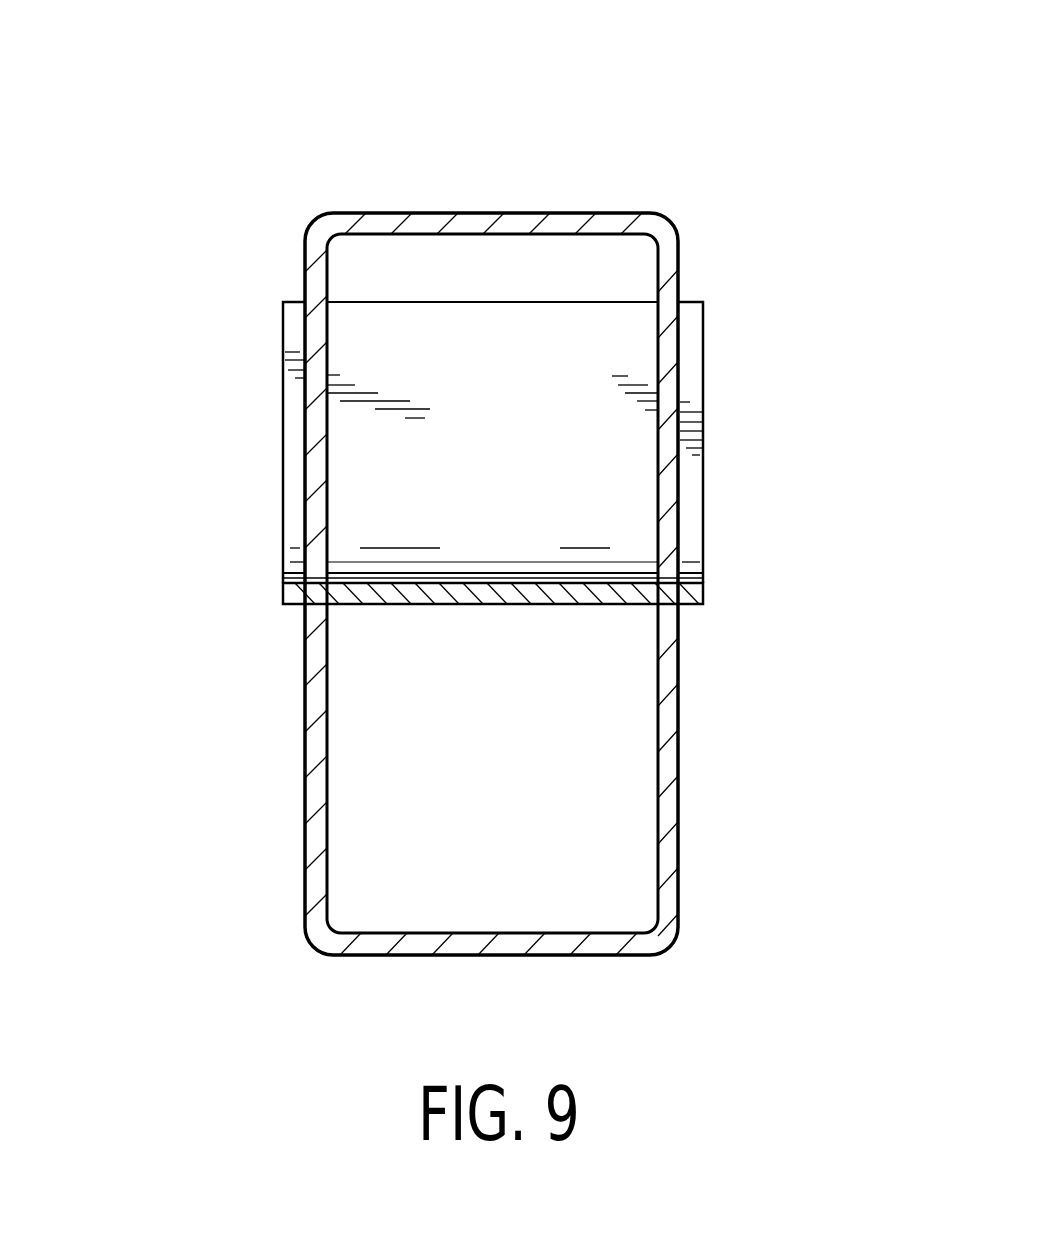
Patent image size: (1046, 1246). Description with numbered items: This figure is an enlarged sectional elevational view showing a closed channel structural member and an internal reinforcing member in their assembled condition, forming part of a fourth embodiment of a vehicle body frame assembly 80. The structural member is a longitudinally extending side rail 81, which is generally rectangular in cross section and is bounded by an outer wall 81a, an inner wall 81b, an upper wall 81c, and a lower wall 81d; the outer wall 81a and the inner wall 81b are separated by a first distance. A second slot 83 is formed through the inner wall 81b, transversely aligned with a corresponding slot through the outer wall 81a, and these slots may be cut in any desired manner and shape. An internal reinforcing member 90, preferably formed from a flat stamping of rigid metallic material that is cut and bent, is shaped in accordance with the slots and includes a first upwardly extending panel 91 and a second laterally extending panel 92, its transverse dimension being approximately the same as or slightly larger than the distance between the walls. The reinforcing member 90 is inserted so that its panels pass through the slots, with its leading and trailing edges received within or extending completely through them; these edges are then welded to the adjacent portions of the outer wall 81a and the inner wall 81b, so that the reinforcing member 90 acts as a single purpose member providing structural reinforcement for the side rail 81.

The vehicle body frame assembly 80 is at (735, 70).
The side rail 81 is at (667, 215).
The outer wall 81a is at (316, 845).
The inner wall 81b is at (670, 670).
The upper wall 81c is at (397, 215).
The lower wall 81d is at (515, 955).
The second slot 83 is at (685, 607).
The internal reinforcing member 90 is at (232, 480).
The first upwardly extending panel 91 is at (465, 345).
The second laterally extending panel 92 is at (470, 583).